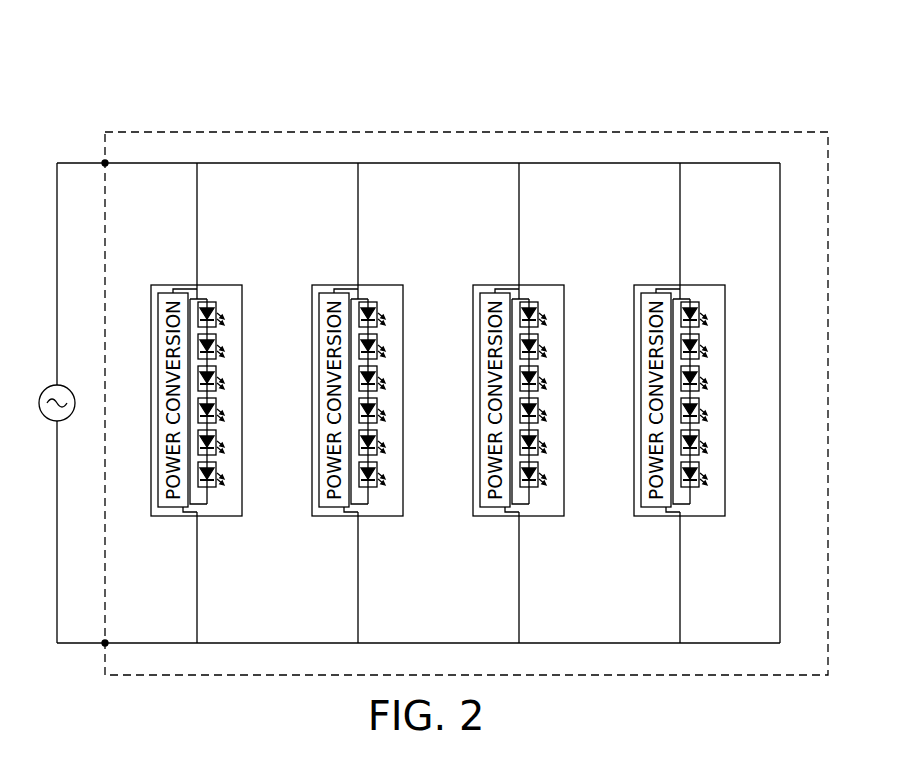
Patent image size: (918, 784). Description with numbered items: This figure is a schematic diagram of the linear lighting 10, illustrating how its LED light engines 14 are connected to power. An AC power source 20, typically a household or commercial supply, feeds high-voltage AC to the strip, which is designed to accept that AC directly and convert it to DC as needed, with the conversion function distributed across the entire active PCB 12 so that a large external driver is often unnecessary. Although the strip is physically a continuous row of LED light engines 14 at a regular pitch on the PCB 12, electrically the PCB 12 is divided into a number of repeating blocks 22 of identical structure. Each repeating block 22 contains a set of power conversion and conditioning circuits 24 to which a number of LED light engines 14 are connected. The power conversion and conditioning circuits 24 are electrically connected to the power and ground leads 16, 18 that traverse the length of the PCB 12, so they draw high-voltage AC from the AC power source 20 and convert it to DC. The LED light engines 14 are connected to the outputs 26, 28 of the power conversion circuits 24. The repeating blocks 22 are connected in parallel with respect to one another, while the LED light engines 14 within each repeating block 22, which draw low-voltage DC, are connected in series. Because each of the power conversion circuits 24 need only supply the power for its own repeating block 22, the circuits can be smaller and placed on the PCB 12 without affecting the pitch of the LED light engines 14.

The linear lighting 10 is at (213, 110).
The PCB 12 is at (513, 130).
The LED light engine 14 is at (736, 476).
The power lead 16 is at (284, 166).
The ground lead 18 is at (256, 642).
The AC power source 20 is at (47, 385).
The repeating block 22 is at (164, 284).
The power conversion and conditioning circuit 24 is at (151, 433).
The output 26 is at (206, 290).
The output 28 is at (201, 514).